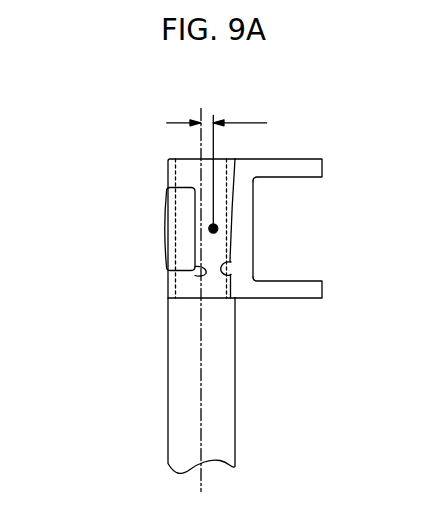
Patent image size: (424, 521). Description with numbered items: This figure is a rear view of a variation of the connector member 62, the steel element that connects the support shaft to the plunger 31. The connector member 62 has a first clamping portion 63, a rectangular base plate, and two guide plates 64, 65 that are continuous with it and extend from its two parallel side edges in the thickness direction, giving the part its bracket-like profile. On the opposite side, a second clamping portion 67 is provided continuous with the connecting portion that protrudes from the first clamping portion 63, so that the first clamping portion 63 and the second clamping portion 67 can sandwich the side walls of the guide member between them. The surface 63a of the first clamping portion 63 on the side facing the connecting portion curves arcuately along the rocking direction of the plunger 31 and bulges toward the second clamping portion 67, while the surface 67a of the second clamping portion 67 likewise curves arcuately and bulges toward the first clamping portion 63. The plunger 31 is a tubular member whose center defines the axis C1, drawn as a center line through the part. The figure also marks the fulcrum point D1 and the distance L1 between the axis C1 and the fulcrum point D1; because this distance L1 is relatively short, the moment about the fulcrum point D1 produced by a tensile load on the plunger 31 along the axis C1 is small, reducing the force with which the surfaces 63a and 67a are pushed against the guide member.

The connector member 62 is at (158, 156).
The first clamping portion 63 is at (240, 195).
The surface of the first clamping portion 63a is at (231, 267).
The guide plate 64 is at (310, 172).
The guide plate 65 is at (288, 290).
The second clamping portion 67 is at (165, 228).
The surface of the second clamping portion 67a is at (203, 273).
The plunger 31 is at (220, 435).
The axis C1 is at (200, 485).
The fulcrum point D1 is at (216, 233).
The distance L1 is at (217, 110).